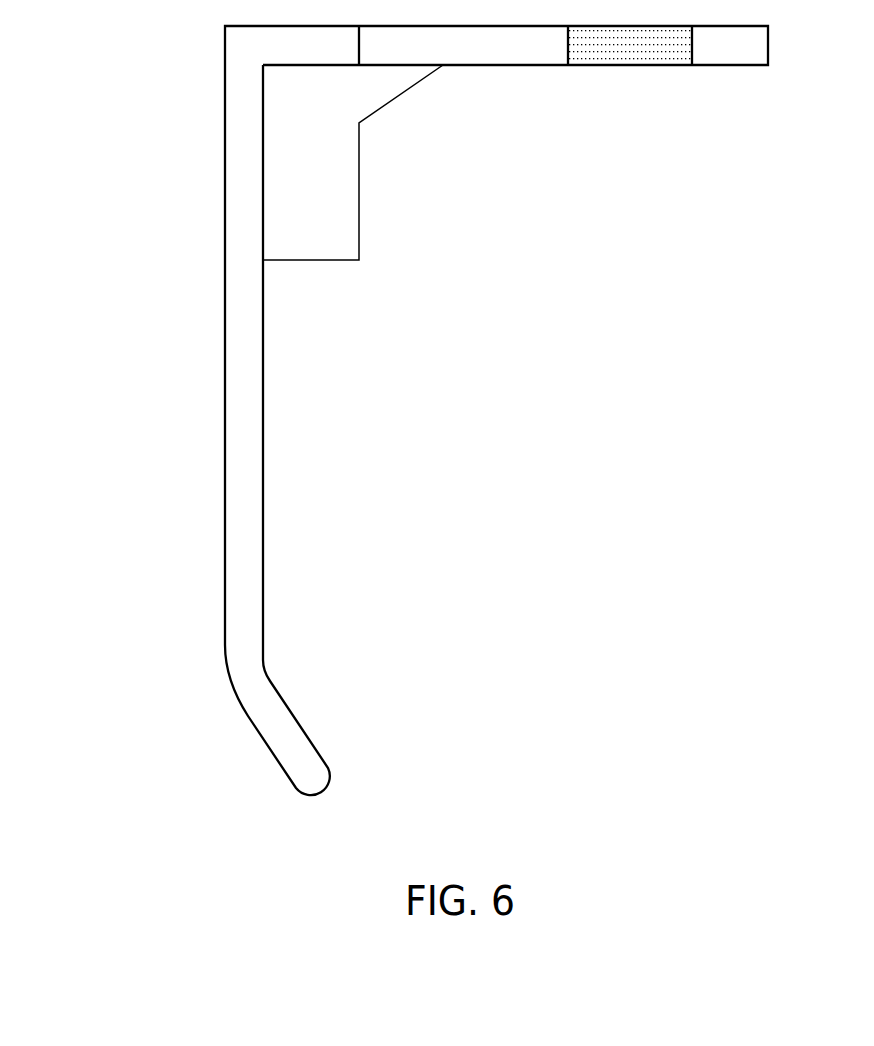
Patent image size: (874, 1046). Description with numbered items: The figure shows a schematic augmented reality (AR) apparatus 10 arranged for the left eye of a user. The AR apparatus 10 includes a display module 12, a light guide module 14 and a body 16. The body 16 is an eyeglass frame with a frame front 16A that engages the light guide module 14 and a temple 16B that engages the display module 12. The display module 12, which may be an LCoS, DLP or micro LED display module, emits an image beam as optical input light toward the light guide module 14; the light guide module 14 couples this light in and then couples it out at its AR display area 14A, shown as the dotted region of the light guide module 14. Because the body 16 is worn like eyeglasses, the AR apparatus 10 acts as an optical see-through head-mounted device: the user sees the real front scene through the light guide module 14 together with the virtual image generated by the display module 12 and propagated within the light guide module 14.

The augmented reality (AR) apparatus 10 is at (90, 35).
The display module 12 is at (343, 200).
The light guide module 14 is at (757, 46).
The AR display area 14A is at (692, 73).
The body 16 is at (103, 137).
The frame front 16A is at (310, 53).
The temple 16B is at (232, 281).